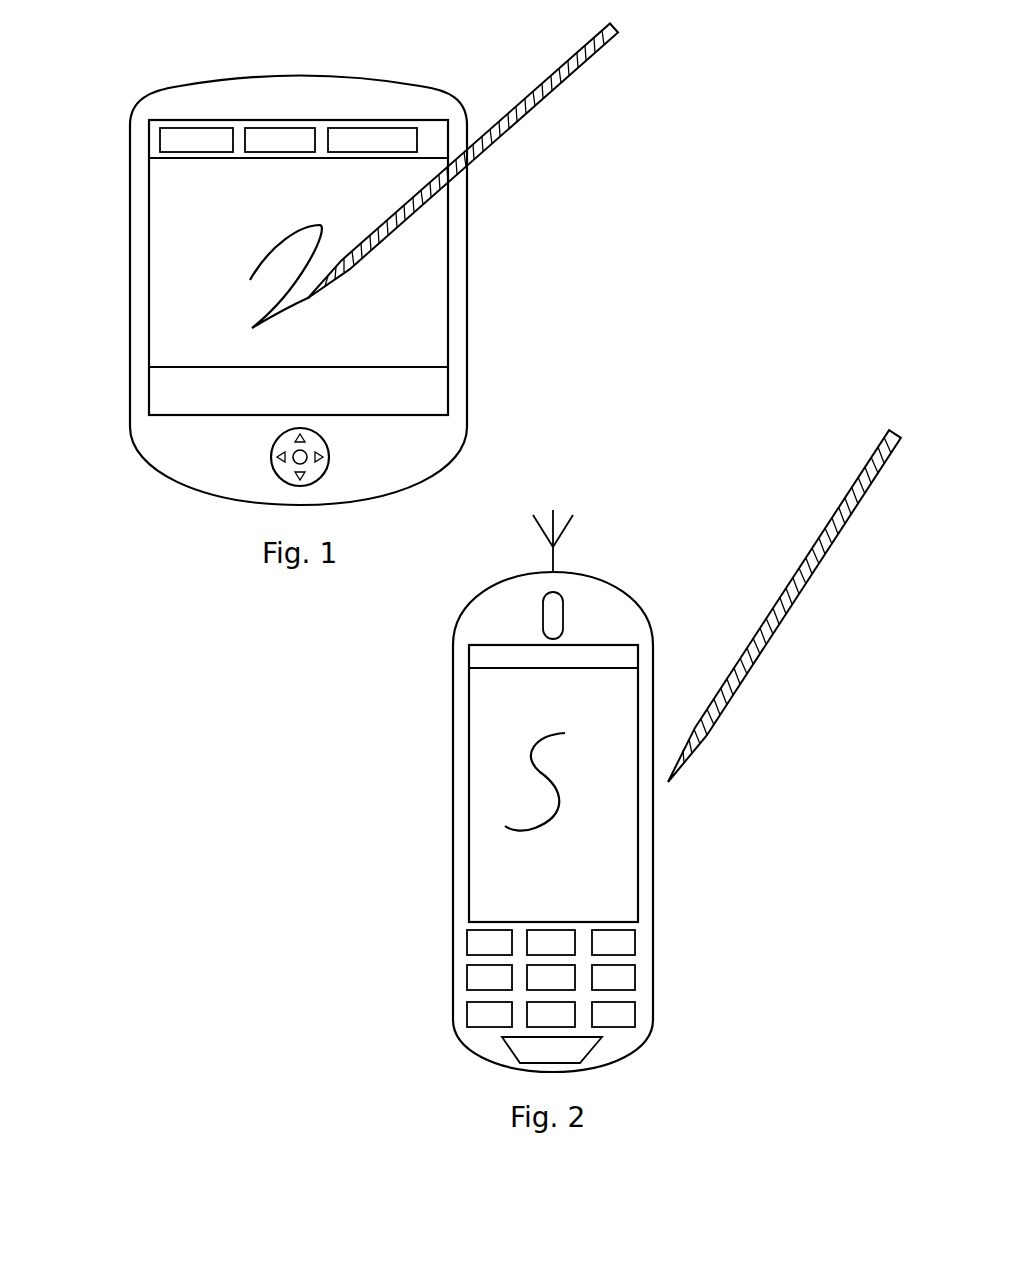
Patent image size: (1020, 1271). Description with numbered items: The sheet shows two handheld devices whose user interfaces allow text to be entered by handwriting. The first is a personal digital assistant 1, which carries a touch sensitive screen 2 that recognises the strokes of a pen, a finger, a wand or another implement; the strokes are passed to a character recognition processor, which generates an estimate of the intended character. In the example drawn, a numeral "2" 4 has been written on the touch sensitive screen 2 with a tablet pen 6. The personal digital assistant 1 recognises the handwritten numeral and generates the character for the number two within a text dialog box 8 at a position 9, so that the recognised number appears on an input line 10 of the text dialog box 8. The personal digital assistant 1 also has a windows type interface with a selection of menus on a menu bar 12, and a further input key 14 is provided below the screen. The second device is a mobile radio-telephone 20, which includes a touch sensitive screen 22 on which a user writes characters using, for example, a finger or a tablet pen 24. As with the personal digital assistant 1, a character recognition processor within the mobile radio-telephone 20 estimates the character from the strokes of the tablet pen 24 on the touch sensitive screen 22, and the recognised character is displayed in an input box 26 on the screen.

In FIG. 1, the personal digital assistant 1 is at (467, 427).
In FIG. 1, the touch sensitive screen 2 is at (449, 215).
In FIG. 1, the numeral "2" 4 is at (300, 225).
In FIG. 1, the tablet pen 6 is at (578, 75).
In FIG. 1, the text dialog box 8 is at (448, 378).
In FIG. 1, the position 9 is at (176, 404).
In FIG. 1, the input line 10 is at (119, 386).
In FIG. 1, the menu bar 12 is at (119, 146).
In FIG. 1, the input key 14 is at (329, 457).
In FIG. 2, the mobile radio-telephone 20 is at (653, 835).
In FIG. 2, the touch sensitive screen 22 is at (602, 890).
In FIG. 2, the tablet pen 24 is at (743, 690).
In FIG. 2, the input box 26 is at (440, 663).